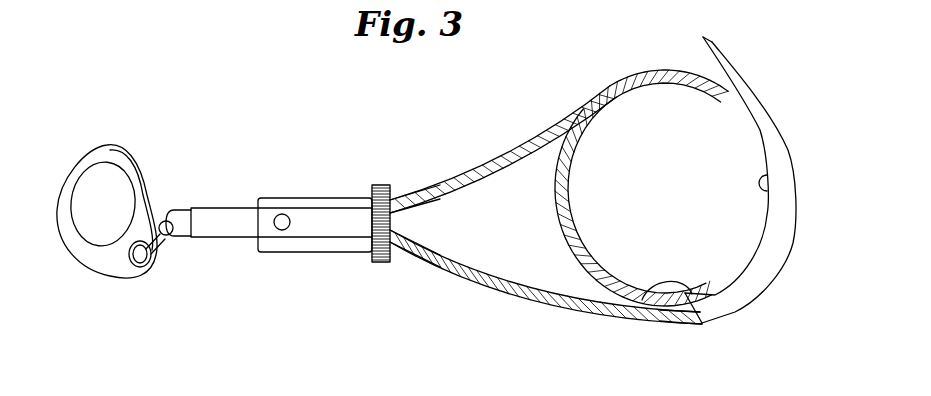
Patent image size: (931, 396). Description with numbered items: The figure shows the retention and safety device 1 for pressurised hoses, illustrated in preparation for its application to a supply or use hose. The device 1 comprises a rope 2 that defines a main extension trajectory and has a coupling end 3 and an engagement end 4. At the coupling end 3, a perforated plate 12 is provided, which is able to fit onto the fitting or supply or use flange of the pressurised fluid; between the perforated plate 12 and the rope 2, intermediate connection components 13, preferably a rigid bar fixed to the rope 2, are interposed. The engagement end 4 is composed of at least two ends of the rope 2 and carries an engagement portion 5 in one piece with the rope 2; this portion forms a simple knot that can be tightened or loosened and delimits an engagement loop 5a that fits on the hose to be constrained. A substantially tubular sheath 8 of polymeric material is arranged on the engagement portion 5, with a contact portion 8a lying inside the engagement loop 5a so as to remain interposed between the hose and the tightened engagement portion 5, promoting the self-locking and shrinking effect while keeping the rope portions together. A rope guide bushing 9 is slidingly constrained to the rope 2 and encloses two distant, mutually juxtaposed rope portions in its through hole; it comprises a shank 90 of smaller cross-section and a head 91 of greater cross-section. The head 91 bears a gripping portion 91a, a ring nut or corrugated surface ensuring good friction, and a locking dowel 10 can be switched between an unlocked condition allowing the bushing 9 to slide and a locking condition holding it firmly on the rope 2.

The retention and safety device 1 is at (589, 228).
The rope 2 is at (427, 210).
The coupling end 3 is at (240, 214).
The engagement end 4 is at (475, 170).
The engagement portion 5 is at (669, 330).
The engagement loop 5a is at (688, 296).
The sheath 8 is at (759, 180).
The contact portion 8a is at (770, 184).
The rope guide bushing 9 is at (340, 241).
The locking dowel 10 is at (284, 206).
The perforated plate 12 is at (129, 158).
The intermediate connection components 13 is at (220, 212).
The shank 90 is at (315, 191).
The head 91 is at (388, 231).
The gripping portion 91a is at (380, 185).